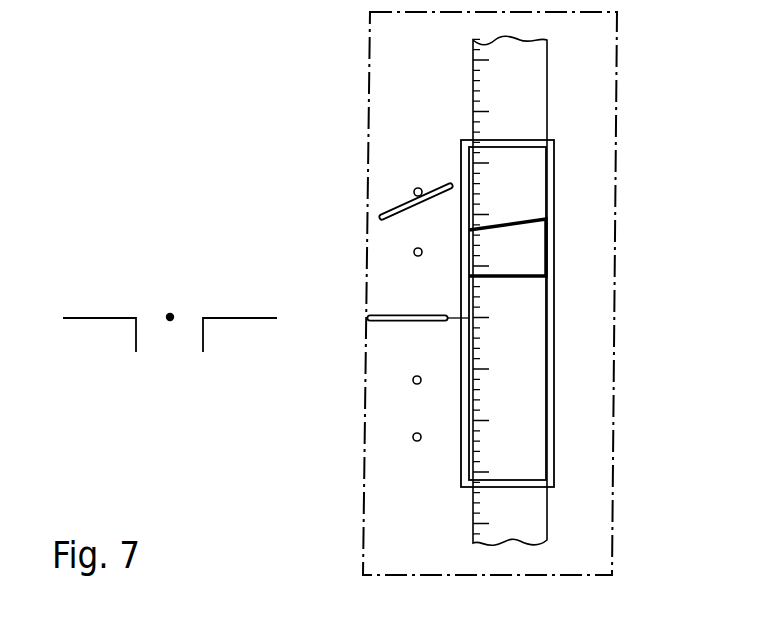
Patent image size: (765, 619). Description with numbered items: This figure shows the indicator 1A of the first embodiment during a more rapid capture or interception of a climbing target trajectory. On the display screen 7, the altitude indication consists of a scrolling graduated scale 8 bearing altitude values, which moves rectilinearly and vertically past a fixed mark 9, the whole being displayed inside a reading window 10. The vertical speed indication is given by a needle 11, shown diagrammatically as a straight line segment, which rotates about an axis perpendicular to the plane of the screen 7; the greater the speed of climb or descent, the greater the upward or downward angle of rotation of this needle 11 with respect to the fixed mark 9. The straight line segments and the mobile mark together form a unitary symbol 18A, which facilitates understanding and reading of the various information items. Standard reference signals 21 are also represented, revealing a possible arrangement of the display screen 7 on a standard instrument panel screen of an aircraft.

The indicator 1A is at (307, 92).
The display screen 7 is at (612, 423).
The scrolling graduated scale 8 is at (542, 515).
The fixed mark 9 is at (392, 322).
The reading window 10 is at (554, 333).
The needle 11 is at (397, 200).
The symbol 18A is at (570, 248).
The standard reference signals 21 is at (167, 286).